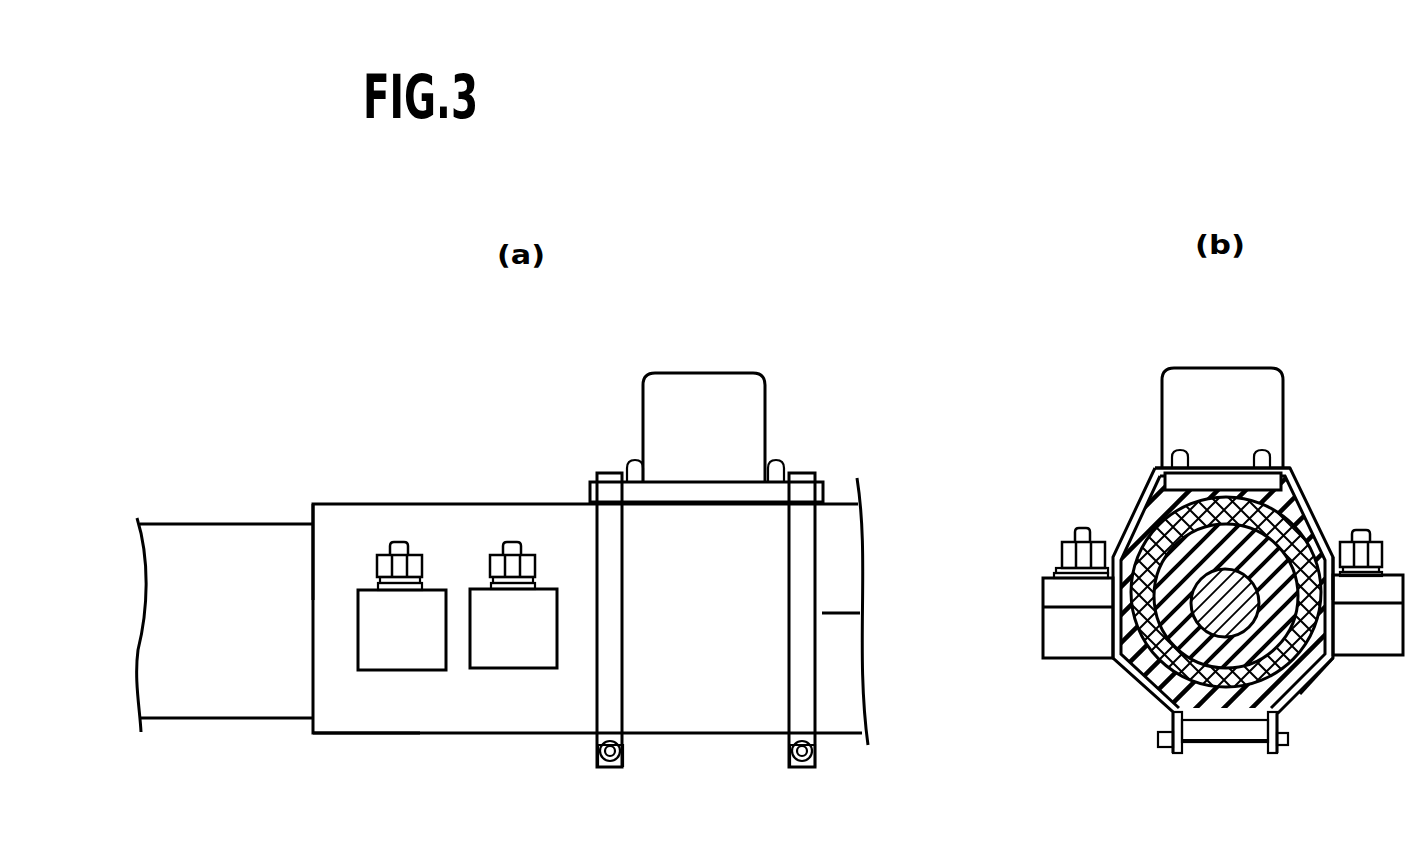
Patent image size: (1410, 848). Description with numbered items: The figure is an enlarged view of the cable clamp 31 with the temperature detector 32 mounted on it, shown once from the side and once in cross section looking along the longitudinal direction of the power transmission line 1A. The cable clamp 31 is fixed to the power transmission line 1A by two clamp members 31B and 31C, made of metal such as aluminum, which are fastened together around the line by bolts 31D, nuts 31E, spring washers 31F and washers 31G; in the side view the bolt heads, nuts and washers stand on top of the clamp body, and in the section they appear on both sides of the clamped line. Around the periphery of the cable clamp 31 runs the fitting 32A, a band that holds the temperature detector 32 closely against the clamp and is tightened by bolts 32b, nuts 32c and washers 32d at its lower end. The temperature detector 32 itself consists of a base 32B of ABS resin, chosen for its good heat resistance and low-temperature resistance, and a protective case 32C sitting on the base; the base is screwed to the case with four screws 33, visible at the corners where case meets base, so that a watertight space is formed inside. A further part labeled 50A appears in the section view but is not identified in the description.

The power transmission line 1A is at (234, 545).
The cable clamp 31 is at (347, 527).
The clamp member 31B is at (345, 527).
The clamp member 31C is at (347, 722).
The bolt 31D is at (395, 548).
The nut 31E is at (418, 553).
The spring washer 31F is at (388, 582).
The washer 31G is at (428, 588).
The temperature detector 32 is at (648, 375).
The fitting 32A is at (614, 668).
The base 32B is at (703, 495).
The protective case 32C is at (748, 373).
The bolt 32b is at (600, 750).
The nut 32c is at (605, 768).
The washer 32d is at (625, 750).
The screw 33 is at (630, 462).
The support plate 50A is at (1154, 493).